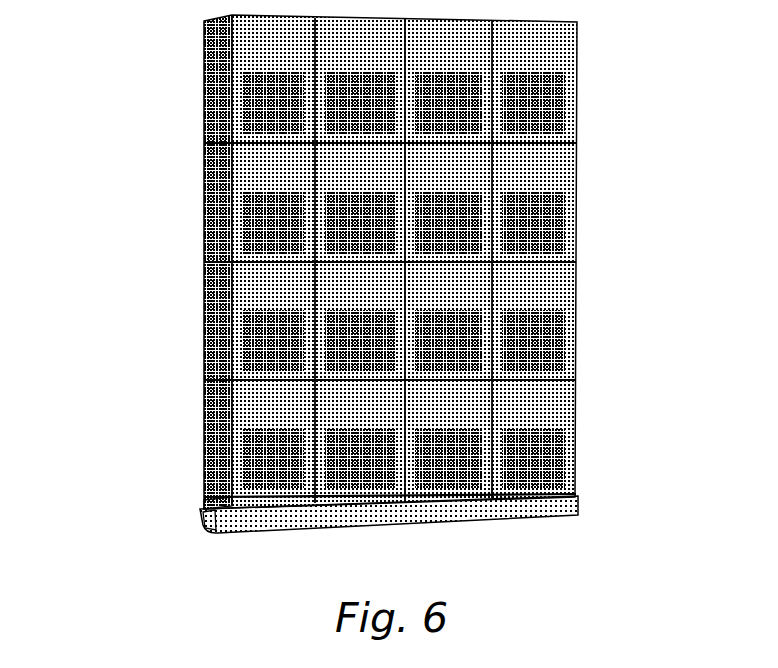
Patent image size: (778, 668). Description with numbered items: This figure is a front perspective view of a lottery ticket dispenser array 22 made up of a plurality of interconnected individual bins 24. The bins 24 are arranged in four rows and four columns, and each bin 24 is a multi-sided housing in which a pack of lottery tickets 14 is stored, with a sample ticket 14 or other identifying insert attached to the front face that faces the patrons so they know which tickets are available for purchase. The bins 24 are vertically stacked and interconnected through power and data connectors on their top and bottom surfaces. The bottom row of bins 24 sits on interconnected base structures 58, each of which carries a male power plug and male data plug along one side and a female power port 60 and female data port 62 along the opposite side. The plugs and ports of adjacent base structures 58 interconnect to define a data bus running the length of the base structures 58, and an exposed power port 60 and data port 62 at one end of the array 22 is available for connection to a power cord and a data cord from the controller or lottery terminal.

The lottery tickets 14 is at (538, 52).
The dispenser array 22 is at (96, 113).
The individual bins 24 is at (203, 335).
The base structure 58 is at (530, 512).
The female power port 60 is at (209, 524).
The female data port 62 is at (204, 514).